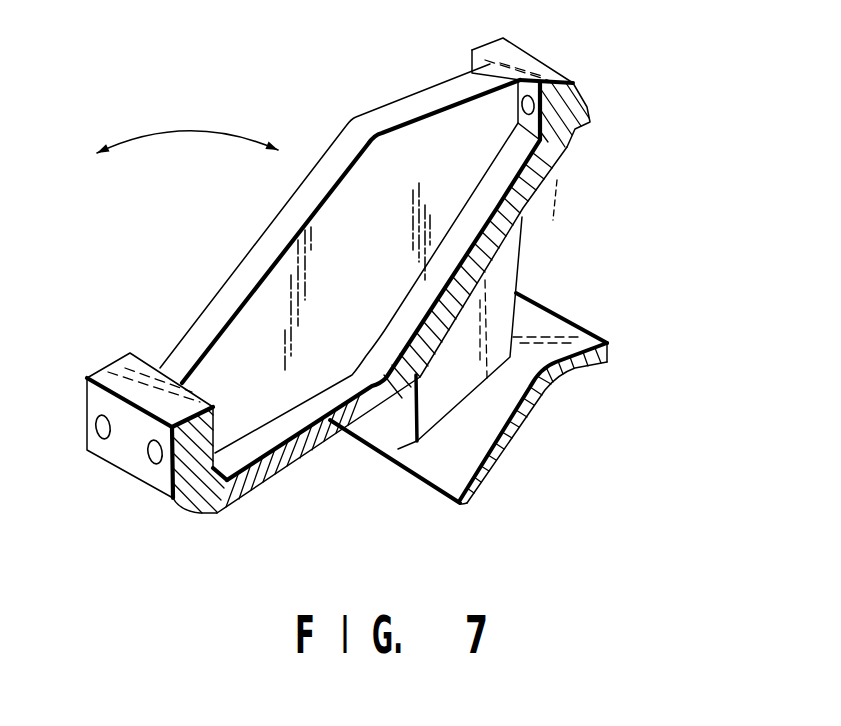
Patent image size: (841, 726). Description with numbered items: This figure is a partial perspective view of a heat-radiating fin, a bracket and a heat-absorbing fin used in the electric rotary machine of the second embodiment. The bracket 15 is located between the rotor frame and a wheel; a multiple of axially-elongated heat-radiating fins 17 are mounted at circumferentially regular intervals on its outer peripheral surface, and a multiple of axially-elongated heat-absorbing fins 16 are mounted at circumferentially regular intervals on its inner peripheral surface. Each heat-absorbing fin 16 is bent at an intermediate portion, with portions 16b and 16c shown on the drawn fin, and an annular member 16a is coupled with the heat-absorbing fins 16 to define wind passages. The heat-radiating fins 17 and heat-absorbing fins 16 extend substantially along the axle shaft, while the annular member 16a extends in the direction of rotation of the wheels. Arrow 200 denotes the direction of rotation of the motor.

The arrow 200 is at (203, 131).
The heat-radiating fin 17 is at (395, 147).
The bracket 15 is at (552, 146).
The heat-absorbing fin 16 is at (497, 346).
The annular member 16a is at (577, 338).
The side wall 16b is at (512, 243).
The bottom edge 16c is at (393, 430).